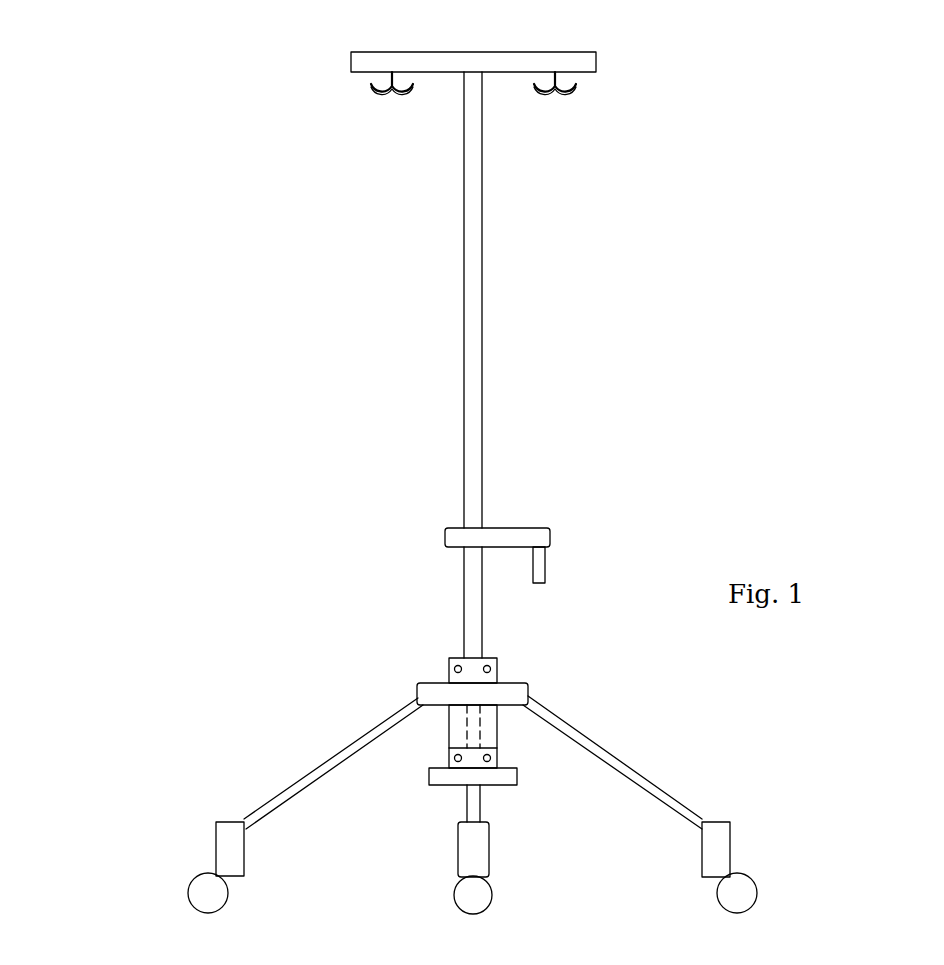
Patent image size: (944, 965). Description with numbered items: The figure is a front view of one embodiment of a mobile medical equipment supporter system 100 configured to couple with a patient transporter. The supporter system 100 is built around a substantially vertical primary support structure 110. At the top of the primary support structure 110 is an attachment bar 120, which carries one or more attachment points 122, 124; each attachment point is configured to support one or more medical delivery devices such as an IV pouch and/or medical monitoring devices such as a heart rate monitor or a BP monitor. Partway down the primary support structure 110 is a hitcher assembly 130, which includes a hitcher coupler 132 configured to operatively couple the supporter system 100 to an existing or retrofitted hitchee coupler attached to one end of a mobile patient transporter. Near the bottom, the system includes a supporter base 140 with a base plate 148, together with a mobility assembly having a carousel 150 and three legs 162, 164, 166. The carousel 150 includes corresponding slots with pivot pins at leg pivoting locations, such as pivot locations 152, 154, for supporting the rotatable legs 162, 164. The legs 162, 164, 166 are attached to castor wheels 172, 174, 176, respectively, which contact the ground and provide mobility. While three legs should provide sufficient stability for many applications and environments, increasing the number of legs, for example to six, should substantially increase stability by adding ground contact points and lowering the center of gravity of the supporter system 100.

The mobile medical equipment supporter system 100 is at (198, 167).
The primary support structure 110 is at (482, 369).
The attachment bar 120 is at (585, 52).
The attachment point 122 is at (389, 92).
The attachment point 124 is at (557, 92).
The hitcher assembly 130 is at (505, 528).
The hitcher coupler 132 is at (546, 558).
The supporter base 140 is at (498, 727).
The base plate 148 is at (447, 788).
The carousel 150 is at (504, 683).
The pivot location 152 is at (530, 697).
The pivot location 154 is at (418, 696).
The leg 162 is at (620, 760).
The leg 164 is at (313, 768).
The leg 166 is at (481, 790).
The castor wheel 172 is at (730, 842).
The castor wheel 174 is at (245, 845).
The castor wheel 176 is at (490, 845).